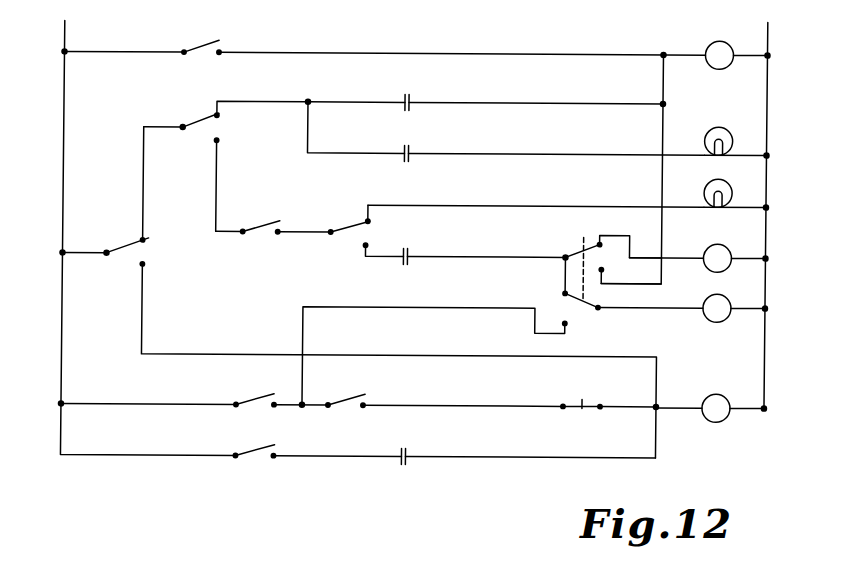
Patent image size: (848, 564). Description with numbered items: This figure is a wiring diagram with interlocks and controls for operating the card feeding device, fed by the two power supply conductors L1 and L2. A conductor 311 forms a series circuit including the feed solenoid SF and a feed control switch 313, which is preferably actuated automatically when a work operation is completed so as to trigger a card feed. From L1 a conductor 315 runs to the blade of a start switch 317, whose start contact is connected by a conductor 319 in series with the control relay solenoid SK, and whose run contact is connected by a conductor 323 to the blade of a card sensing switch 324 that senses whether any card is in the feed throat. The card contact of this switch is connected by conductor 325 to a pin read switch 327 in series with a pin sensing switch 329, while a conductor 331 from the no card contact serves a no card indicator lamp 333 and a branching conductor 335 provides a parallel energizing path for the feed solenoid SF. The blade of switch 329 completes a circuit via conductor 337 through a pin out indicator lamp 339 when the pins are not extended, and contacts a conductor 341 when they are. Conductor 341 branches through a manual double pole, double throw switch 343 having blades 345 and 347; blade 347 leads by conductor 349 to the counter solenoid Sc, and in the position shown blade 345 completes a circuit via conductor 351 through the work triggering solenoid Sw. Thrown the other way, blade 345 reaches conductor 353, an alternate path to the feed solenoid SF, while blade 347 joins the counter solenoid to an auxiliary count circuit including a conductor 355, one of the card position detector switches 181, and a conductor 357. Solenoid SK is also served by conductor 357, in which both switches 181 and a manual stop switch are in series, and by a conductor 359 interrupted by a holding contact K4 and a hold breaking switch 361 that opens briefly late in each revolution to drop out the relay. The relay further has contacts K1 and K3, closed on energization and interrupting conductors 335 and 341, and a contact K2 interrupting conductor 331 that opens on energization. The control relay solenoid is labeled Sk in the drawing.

The conductor 311 is at (444, 49).
The feed control switch 313 is at (207, 43).
The conductor 315 is at (67, 253).
The start switch 317 is at (135, 241).
The conductor 319 is at (255, 353).
The conductor 323 is at (145, 158).
The card sensing switch 324 is at (210, 118).
The conductor 325 is at (219, 178).
The pin read switch 327 is at (270, 220).
The pin sensing switch 329 is at (360, 221).
The conductor 331 is at (369, 153).
The no card indicator lamp 333 is at (722, 126).
The branching conductor 335 is at (381, 103).
The conductor 337 is at (531, 203).
The pin out indicator lamp 339 is at (723, 182).
The conductor 341 is at (521, 255).
The double pole double throw switch 343 is at (594, 285).
The blade 345 is at (594, 245).
The blade 347 is at (591, 307).
The conductor 349 is at (652, 306).
The conductor 351 is at (675, 255).
The conductor 353 is at (664, 133).
The conductor 355 is at (444, 303).
The conductor 357 is at (177, 399).
The conductor 359 is at (559, 454).
The hold breaking switch 361 is at (263, 446).
The card position detector switches 181 is at (269, 394).
The relay contact K1 is at (411, 96).
The relay contact K2 is at (411, 147).
The relay contact K3 is at (411, 250).
The holding contact K4 is at (411, 450).
The feed solenoid SF is at (729, 63).
The work triggering solenoid Sw is at (729, 266).
The counter solenoid Sc is at (729, 316).
The control relay solenoid Sk is at (730, 415).
The power supply conductor L1 is at (65, 25).
The power supply conductor L2 is at (768, 26).